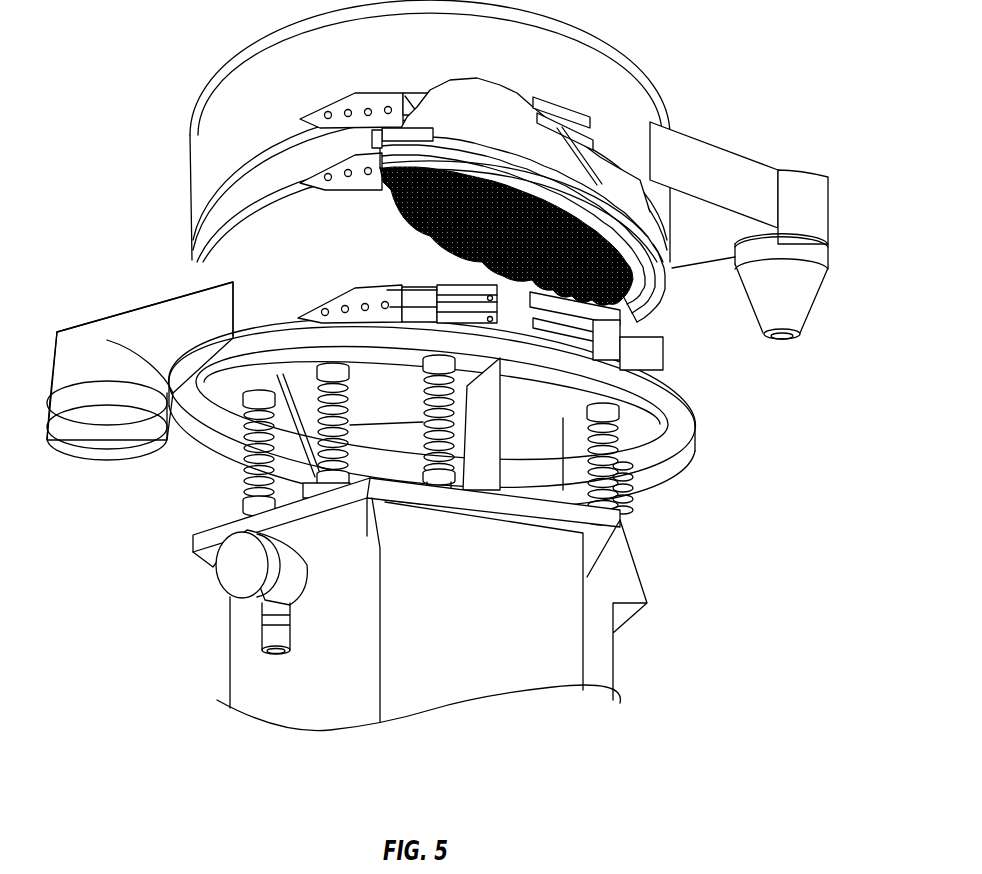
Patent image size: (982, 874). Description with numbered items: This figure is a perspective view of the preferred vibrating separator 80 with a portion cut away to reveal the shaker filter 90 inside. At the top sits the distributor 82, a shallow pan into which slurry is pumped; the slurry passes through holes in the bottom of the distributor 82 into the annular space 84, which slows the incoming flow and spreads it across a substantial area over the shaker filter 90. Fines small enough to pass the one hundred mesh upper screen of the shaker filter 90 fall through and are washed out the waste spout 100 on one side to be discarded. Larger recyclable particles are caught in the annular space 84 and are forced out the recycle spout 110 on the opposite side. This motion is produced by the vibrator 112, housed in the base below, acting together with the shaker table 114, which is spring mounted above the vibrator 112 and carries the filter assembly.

The vibrating separator 80 is at (128, 53).
The distributor 82 is at (428, 133).
The annular space 84 is at (488, 115).
The shaker filter 90 is at (650, 290).
The waste spout 100 is at (80, 337).
The recycle spout 110 is at (797, 180).
The vibrator 112 is at (498, 614).
The shaker table 114 is at (645, 408).